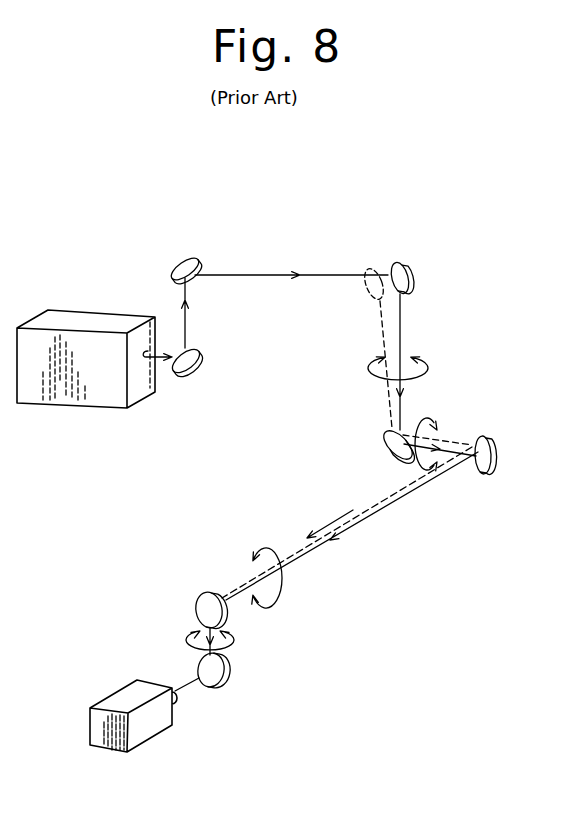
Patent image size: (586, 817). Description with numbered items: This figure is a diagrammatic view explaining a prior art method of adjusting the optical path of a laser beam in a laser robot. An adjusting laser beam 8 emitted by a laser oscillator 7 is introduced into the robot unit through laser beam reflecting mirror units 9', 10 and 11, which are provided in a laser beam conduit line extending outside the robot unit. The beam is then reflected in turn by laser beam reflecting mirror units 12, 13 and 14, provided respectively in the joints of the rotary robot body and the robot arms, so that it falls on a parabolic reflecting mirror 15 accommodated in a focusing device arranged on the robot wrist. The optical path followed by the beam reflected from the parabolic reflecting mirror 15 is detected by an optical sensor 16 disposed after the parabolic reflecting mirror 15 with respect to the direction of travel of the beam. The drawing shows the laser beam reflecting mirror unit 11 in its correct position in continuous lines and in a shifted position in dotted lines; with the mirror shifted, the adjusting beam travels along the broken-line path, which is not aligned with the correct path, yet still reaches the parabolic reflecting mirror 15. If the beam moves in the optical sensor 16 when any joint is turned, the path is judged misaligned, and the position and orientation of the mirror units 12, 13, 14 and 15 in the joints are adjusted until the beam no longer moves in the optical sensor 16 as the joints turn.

The laser oscillator 7 is at (108, 398).
The adjusting laser beam 8 is at (168, 355).
The laser beam reflecting mirror unit 9' is at (200, 359).
The laser beam reflecting mirror unit 10 is at (190, 256).
The laser beam reflecting mirror unit 11 is at (370, 265).
The laser beam reflecting mirror unit 12 is at (382, 448).
The laser beam reflecting mirror unit 13 is at (495, 456).
The laser beam reflecting mirror unit 14 is at (195, 598).
The parabolic reflecting mirror 15 is at (229, 674).
The optical sensor 16 is at (110, 745).